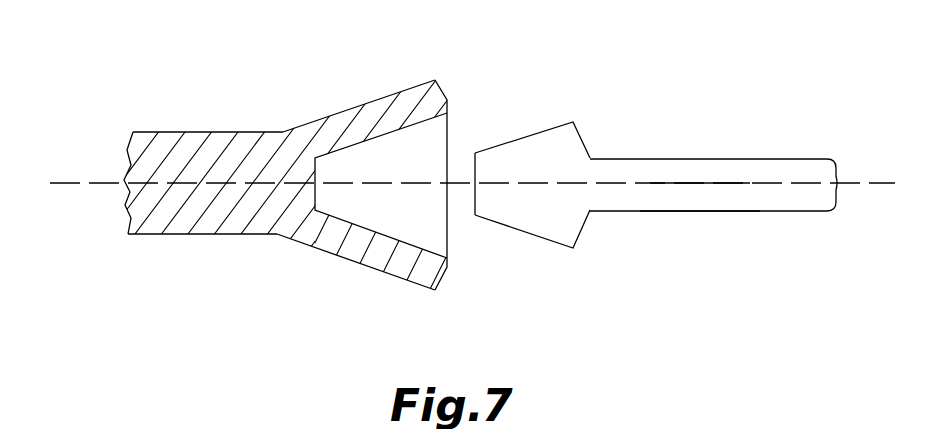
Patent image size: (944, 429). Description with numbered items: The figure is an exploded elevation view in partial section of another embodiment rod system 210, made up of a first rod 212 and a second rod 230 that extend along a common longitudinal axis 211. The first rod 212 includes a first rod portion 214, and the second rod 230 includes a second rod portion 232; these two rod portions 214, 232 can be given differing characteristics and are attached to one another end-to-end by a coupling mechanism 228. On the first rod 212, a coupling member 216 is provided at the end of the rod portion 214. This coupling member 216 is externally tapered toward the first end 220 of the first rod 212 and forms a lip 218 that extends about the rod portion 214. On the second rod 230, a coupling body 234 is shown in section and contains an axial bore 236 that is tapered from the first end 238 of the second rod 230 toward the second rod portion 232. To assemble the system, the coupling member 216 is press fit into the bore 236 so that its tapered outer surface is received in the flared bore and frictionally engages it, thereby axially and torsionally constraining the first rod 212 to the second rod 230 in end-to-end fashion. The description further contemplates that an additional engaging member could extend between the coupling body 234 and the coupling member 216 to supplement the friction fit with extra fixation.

The rod system 210 is at (528, 84).
The longitudinal axis 211 is at (745, 186).
The first rod 212 is at (695, 155).
The first rod portion 214 is at (647, 198).
The coupling member 216 is at (520, 232).
The lip 218 is at (583, 134).
The first end 220 is at (474, 172).
The coupling mechanism 228 is at (285, 288).
The second rod 230 is at (208, 126).
The second rod portion 232 is at (233, 236).
The coupling body 234 is at (378, 98).
The bore 236 is at (393, 198).
The first end 238 is at (442, 87).